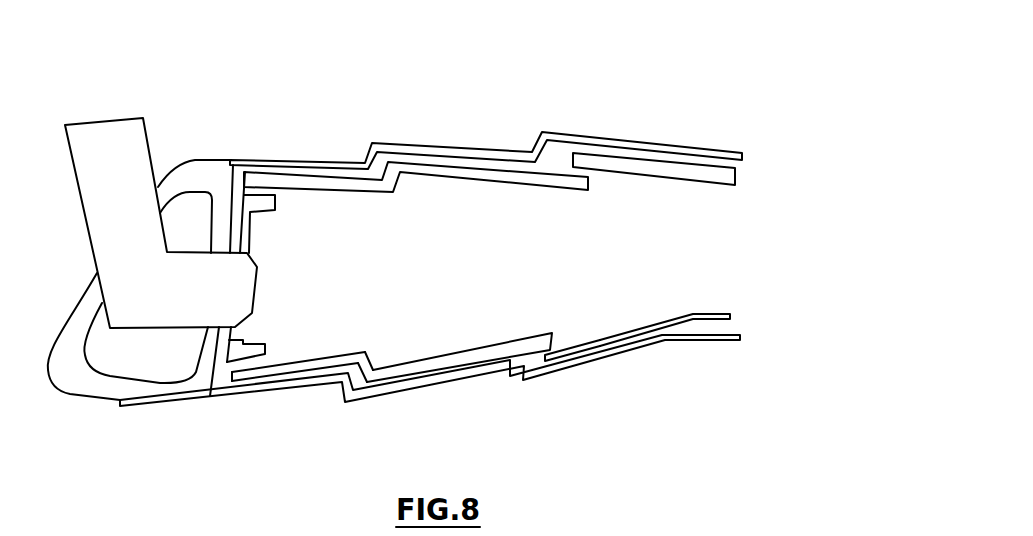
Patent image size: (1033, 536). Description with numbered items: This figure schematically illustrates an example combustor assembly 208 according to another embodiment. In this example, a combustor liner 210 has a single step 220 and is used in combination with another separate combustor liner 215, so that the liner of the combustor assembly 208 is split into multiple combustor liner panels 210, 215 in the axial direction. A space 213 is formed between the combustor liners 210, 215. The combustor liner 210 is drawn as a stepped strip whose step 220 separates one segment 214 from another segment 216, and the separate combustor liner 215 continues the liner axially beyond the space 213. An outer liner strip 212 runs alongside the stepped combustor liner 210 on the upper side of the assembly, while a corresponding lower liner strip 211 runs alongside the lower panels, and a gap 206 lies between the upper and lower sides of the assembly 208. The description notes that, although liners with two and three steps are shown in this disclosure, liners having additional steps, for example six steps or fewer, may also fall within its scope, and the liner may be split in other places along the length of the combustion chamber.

The gap 206 is at (712, 268).
The spring assembly 208 is at (433, 228).
The combustor liner 210 is at (287, 180).
The second spring arm 211 is at (446, 372).
The outer strip 212 is at (465, 152).
The space 213 is at (550, 353).
The first segment 214 is at (287, 371).
The combustor liner 215 is at (638, 333).
The third segment 216 is at (474, 353).
The step 220 is at (369, 365).